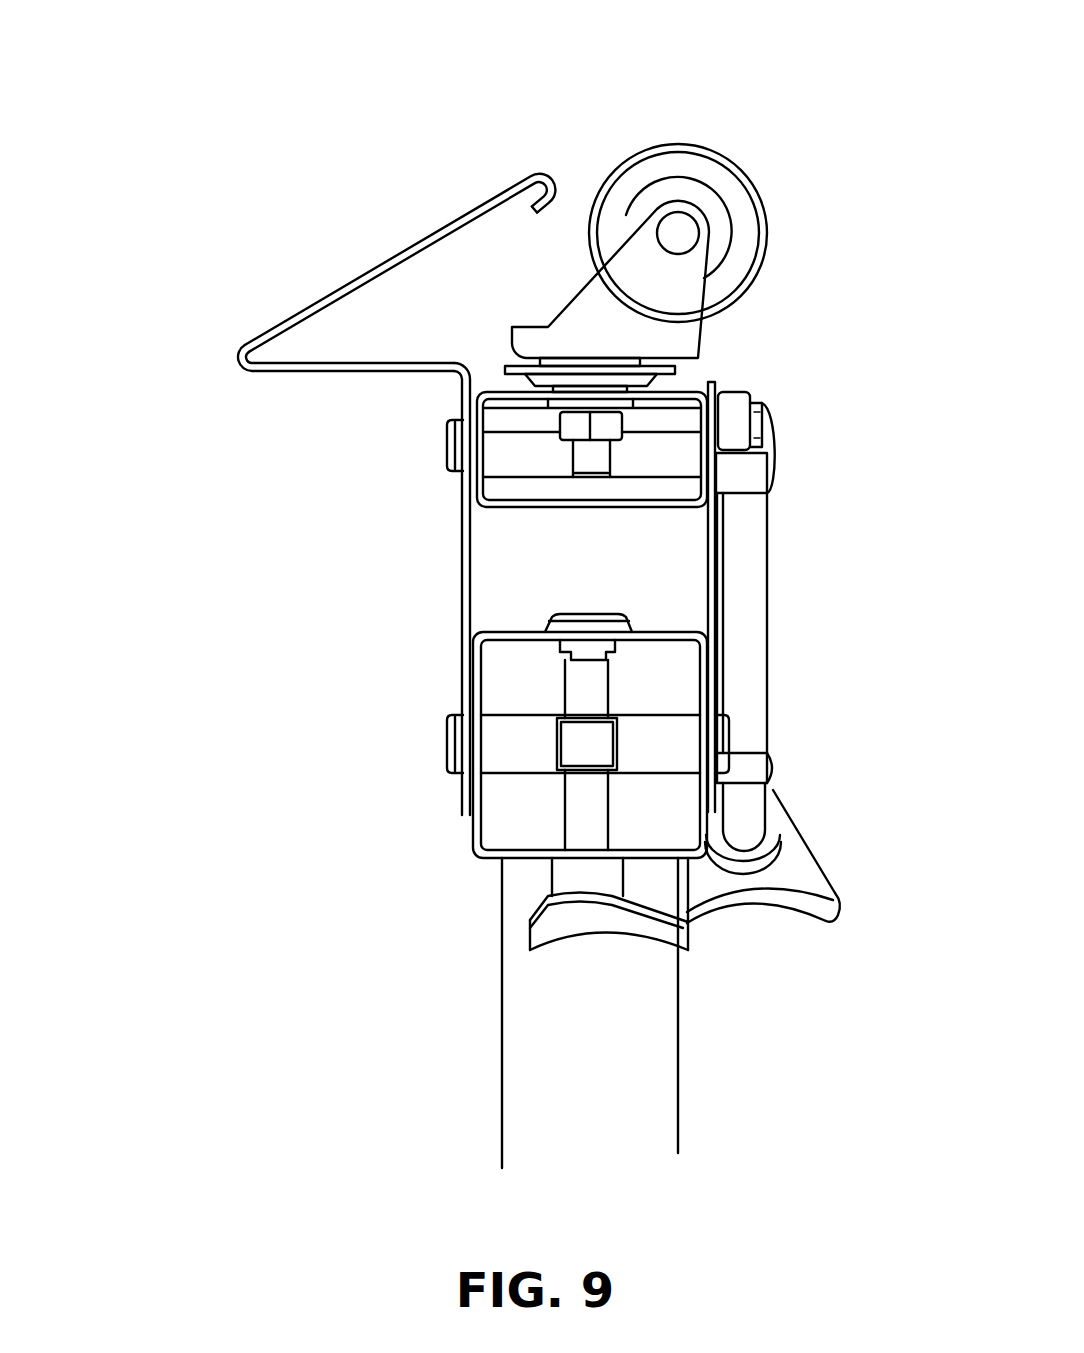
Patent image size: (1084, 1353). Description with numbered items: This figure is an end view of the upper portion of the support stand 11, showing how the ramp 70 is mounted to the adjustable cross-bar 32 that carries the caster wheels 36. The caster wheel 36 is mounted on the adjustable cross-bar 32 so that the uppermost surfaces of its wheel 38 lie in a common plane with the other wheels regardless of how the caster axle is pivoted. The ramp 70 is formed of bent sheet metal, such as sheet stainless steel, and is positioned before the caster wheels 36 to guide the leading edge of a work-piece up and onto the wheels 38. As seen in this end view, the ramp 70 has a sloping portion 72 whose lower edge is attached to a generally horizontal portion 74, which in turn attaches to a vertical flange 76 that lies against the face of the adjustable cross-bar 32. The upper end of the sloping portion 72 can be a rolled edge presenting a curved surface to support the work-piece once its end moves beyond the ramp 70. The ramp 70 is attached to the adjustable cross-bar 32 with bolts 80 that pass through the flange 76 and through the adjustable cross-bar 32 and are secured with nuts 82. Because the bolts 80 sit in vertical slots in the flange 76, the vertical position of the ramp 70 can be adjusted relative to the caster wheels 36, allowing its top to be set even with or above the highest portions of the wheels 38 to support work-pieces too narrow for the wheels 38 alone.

The support stand 11 is at (374, 124).
The adjustable cross-bar 32 is at (515, 503).
The caster wheel 36 is at (688, 337).
The wheel 38 is at (748, 180).
The ramp 70 is at (237, 350).
The sloping portion 72 is at (547, 175).
The horizontal portion 74 is at (337, 372).
The vertical flange 76 is at (472, 452).
The bolt 80 is at (683, 420).
The nut 82 is at (738, 417).